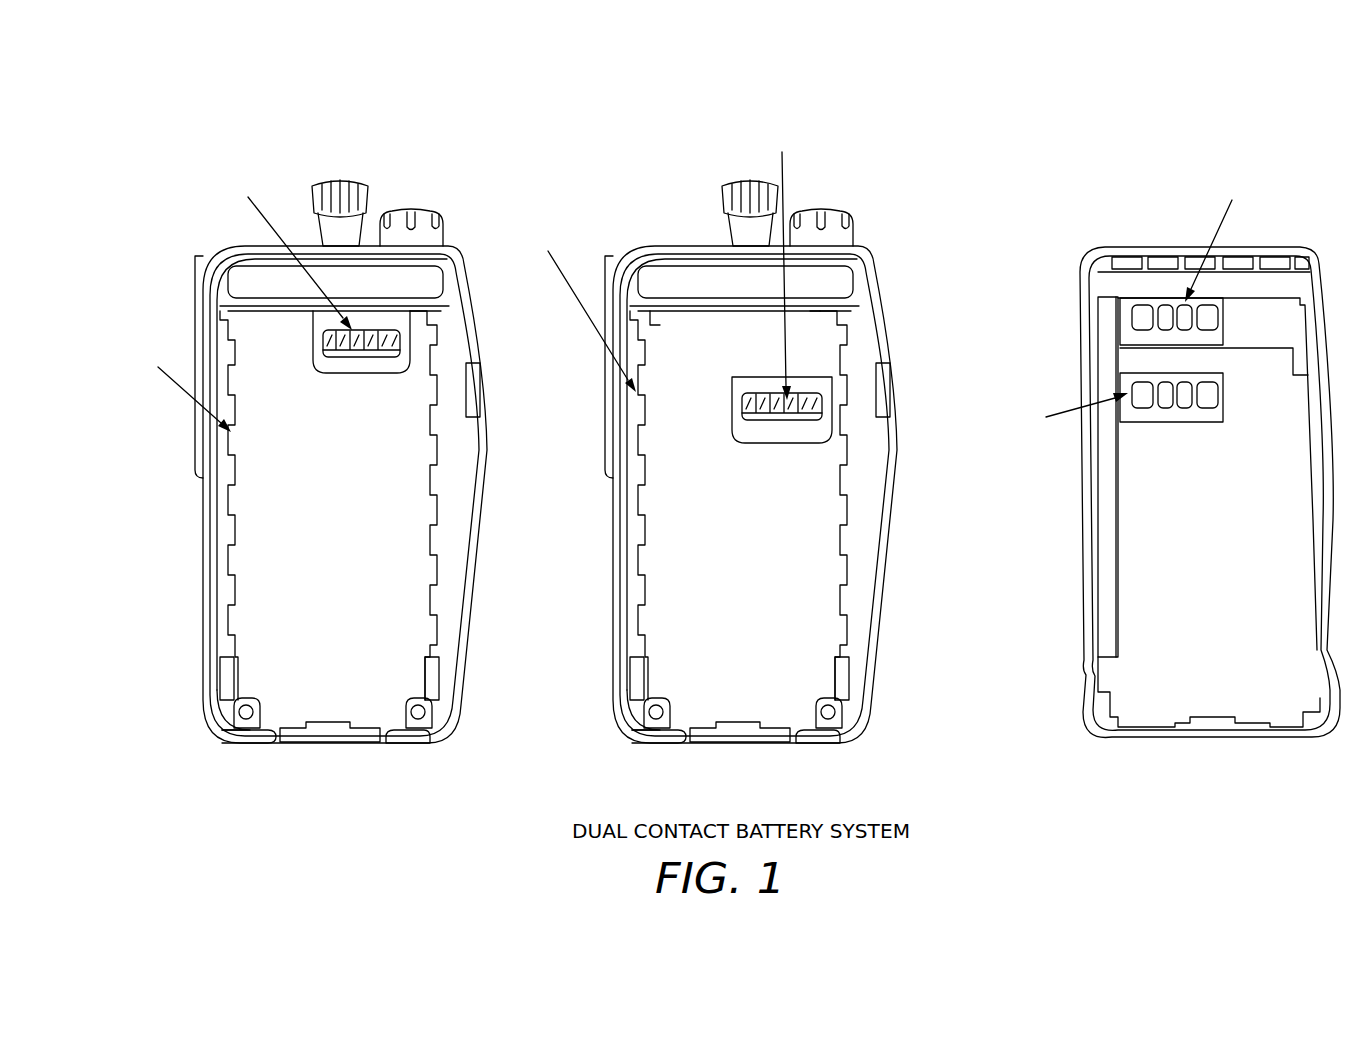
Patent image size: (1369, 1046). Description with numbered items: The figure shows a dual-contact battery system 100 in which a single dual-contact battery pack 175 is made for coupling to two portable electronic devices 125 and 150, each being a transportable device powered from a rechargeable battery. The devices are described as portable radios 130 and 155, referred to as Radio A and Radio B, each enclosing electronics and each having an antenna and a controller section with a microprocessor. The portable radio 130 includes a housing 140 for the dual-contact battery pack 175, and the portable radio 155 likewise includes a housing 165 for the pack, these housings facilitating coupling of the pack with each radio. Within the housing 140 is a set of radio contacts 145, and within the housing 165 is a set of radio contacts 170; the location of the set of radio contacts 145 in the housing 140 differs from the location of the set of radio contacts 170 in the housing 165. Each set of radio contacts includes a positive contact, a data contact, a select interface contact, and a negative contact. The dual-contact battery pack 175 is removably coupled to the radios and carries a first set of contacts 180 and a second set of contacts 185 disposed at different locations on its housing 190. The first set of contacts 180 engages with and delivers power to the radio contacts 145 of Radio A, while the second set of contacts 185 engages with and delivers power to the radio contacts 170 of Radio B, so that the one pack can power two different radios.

The dual-contact battery system 100 is at (1303, 62).
The portable electronic device 125 is at (124, 146).
The portable radio 130 is at (492, 512).
The housing 140 is at (254, 746).
The set of radio contacts 145 is at (365, 394).
The portable electronic device 150 is at (594, 146).
The portable radio 155 is at (895, 537).
The housing 165 is at (664, 746).
The set of radio contacts 170 is at (777, 469).
The dual-contact battery pack 175 is at (1047, 146).
The first set of contacts 180 is at (1104, 317).
The second set of contacts 185 is at (1224, 432).
The housing 190 is at (1068, 545).